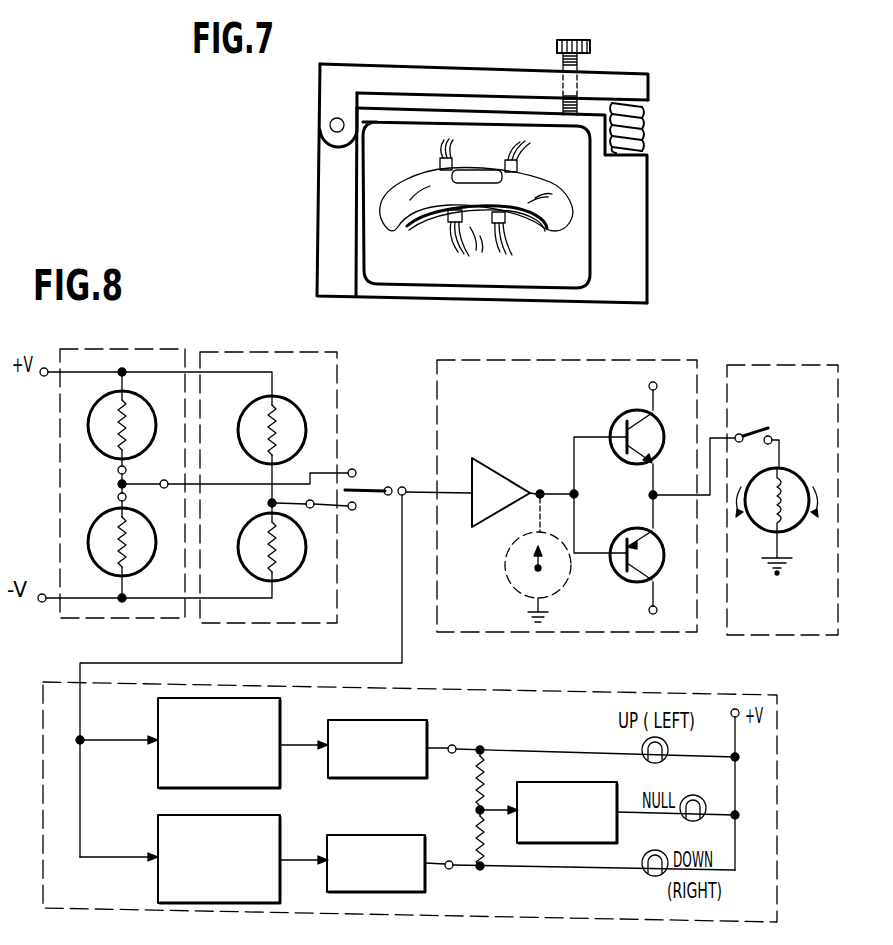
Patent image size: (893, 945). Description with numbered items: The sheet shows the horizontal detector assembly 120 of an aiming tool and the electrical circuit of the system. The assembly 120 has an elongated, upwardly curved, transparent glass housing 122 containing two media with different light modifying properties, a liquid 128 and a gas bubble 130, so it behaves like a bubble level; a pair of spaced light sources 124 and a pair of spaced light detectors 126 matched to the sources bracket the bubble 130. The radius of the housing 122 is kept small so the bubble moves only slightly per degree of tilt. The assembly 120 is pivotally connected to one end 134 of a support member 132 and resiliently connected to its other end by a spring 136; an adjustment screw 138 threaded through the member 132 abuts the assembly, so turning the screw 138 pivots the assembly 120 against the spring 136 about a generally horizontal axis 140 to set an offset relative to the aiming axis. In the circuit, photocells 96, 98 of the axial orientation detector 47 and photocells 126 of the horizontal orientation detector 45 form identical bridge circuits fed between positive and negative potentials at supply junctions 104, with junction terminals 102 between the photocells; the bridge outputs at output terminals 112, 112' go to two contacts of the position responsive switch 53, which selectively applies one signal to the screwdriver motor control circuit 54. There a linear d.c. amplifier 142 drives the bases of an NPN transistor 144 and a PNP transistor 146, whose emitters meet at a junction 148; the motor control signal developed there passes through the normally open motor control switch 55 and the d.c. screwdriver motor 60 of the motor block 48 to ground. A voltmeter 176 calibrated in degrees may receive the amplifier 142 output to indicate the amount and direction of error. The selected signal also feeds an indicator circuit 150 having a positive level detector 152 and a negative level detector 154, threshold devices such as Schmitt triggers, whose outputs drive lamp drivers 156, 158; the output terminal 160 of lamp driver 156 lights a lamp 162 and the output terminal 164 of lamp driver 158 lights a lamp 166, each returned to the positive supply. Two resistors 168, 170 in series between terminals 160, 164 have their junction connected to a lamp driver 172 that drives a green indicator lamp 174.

In FIG. 7, the horizontal detector assembly 120 is at (648, 265).
In FIG. 7, the housing 122 is at (576, 212).
In FIG. 7, the light sources 124 is at (467, 244).
In FIG. 7, the light detectors 126 is at (505, 161).
In FIG. 8, the light detectors 126 is at (303, 425).
In FIG. 7, the liquid 128 is at (545, 217).
In FIG. 7, the gas bubble 130 is at (500, 185).
In FIG. 7, the support member 132 is at (321, 71).
In FIG. 7, the end of support member 134 is at (331, 126).
In FIG. 7, the spring 136 is at (644, 114).
In FIG. 7, the adjustment screw 138 is at (555, 46).
In FIG. 7, the horizontal axis 140 is at (326, 142).
In FIG. 8, the horizontal orientation detector 45 is at (299, 353).
In FIG. 8, the axial orientation detector 47 is at (168, 350).
In FIG. 8, the motor circuit 48 is at (800, 366).
In FIG. 8, the position responsive switch 53 is at (359, 488).
In FIG. 8, the screwdriver motor control circuit 54 is at (661, 360).
In FIG. 8, the motor control switch 55 is at (762, 424).
In FIG. 8, the motor 60 is at (797, 473).
In FIG. 8, the photocell 96 is at (152, 421).
In FIG. 8, the photocell 98 is at (148, 569).
In FIG. 8, the terminal 102 is at (118, 470).
In FIG. 8, the junction 104 is at (125, 370).
In FIG. 8, the output terminal 112 is at (237, 471).
In FIG. 8, the output terminal 112' is at (312, 518).
In FIG. 8, the linear d.c. amplifier 142 is at (500, 478).
In FIG. 8, the NPN transistor 144 is at (612, 425).
In FIG. 8, the PNP transistor 146 is at (612, 540).
In FIG. 8, the junction 148 is at (649, 497).
In FIG. 8, the indicator circuit 150 is at (704, 696).
In FIG. 8, the positive level detector 152 is at (281, 720).
In FIG. 8, the negative level detector 154 is at (281, 837).
In FIG. 8, the lamp driver 156 is at (400, 721).
In FIG. 8, the lamp driver 158 is at (396, 836).
In FIG. 8, the output terminal 160 is at (453, 745).
In FIG. 8, the lamp 162 is at (669, 749).
In FIG. 8, the output terminal 164 is at (452, 870).
In FIG. 8, the lamp 166 is at (645, 856).
In FIG. 8, the resistor 168 is at (489, 788).
In FIG. 8, the resistor 170 is at (487, 836).
In FIG. 8, the lamp driver 172 is at (580, 783).
In FIG. 8, the green indicator lamp 174 is at (686, 799).
In FIG. 8, the voltmeter 176 is at (566, 584).